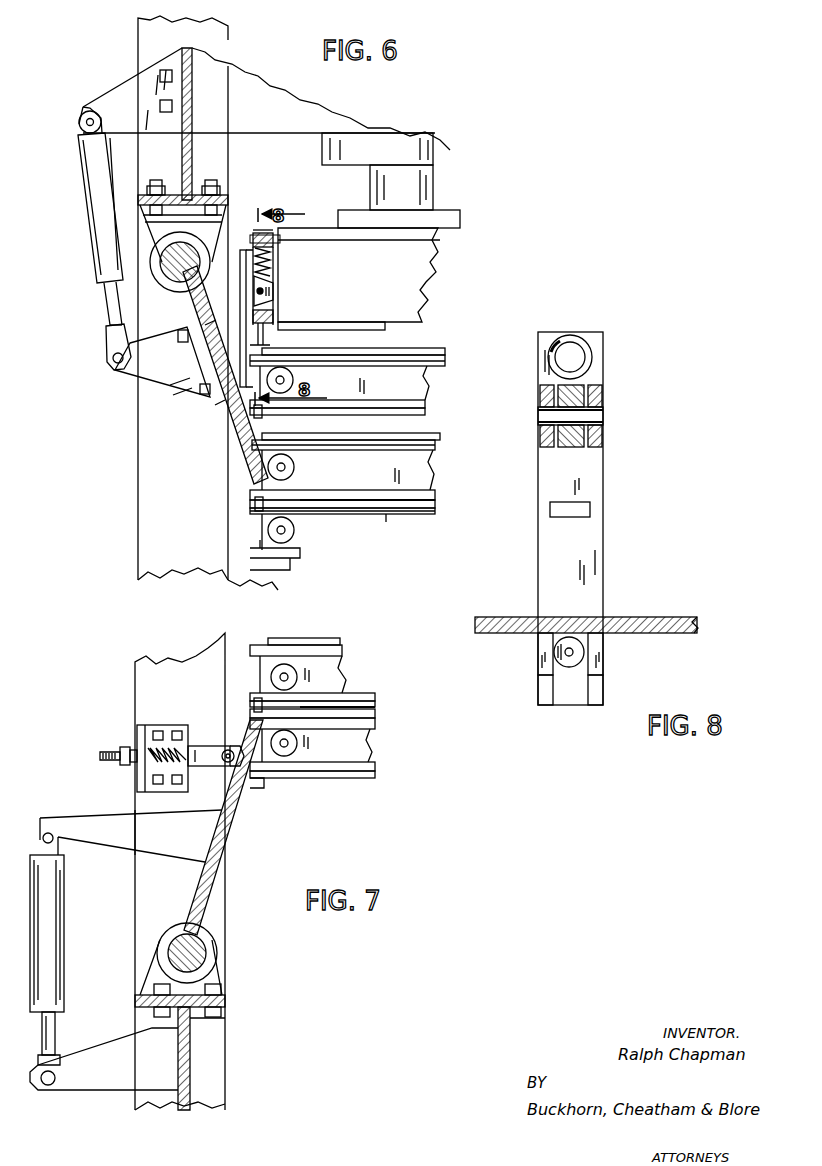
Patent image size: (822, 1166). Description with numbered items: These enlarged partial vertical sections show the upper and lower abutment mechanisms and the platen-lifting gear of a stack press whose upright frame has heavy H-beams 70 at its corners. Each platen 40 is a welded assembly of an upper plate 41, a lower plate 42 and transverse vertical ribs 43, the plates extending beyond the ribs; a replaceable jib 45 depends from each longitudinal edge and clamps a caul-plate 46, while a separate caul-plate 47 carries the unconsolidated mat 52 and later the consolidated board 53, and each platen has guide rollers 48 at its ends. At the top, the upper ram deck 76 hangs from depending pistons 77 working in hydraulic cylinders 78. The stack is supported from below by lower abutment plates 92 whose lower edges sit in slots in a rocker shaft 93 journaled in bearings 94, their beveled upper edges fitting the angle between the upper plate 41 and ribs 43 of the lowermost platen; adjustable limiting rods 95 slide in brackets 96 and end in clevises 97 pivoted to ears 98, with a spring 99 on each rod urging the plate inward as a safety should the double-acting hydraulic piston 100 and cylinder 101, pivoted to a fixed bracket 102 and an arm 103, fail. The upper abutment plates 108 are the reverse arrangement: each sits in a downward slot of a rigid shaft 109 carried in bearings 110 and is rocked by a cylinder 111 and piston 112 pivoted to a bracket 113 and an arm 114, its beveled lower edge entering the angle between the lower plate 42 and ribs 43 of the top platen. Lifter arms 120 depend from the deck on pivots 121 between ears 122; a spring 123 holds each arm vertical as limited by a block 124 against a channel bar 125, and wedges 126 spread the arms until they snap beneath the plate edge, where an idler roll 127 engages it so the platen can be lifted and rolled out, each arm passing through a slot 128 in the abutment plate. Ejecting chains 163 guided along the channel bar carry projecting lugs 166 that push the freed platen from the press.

In FIG. 6, the platen 40 is at (406, 380).
In FIG. 7, the platen 40 is at (314, 666).
In FIG. 6, the upper plate 41 is at (447, 362).
In FIG. 7, the upper plate 41 is at (337, 650).
In FIG. 8, the upper plate 41 is at (676, 624).
In FIG. 6, the lower plate 42 is at (426, 405).
In FIG. 7, the lower plate 42 is at (357, 698).
In FIG. 6, the transverse vertical ribs 43 is at (432, 381).
In FIG. 7, the transverse vertical ribs 43 is at (342, 673).
In FIG. 6, the jib 45 is at (262, 417).
In FIG. 7, the jib 45 is at (257, 706).
In FIG. 6, the caul-plate 46 is at (426, 412).
In FIG. 7, the caul-plate 46 is at (362, 705).
In FIG. 6, the caul-plate 47 is at (445, 357).
In FIG. 7, the caul-plate 47 is at (362, 714).
In FIG. 6, the guide rollers 48 is at (296, 380).
In FIG. 7, the guide rollers 48 is at (299, 677).
In FIG. 6, the unconsolidated mat 52 is at (420, 507).
In FIG. 7, the unconsolidated mat 52 is at (362, 709).
In FIG. 6, the consolidated board 53 is at (392, 352).
In FIG. 6, the H-beams 70 is at (218, 46).
In FIG. 7, the H-beams 70 is at (146, 690).
In FIG. 6, the ram deck 76 is at (388, 288).
In FIG. 6, the pistons 77 is at (422, 193).
In FIG. 6, the hydraulic cylinders 78 is at (428, 152).
In FIG. 7, the lower abutment plates 92 is at (212, 886).
In FIG. 7, the rocker shaft 93 is at (203, 950).
In FIG. 7, the bearings 94 is at (215, 980).
In FIG. 7, the adjustable limiting rods 95 is at (100, 755).
In FIG. 7, the brackets 96 is at (140, 774).
In FIG. 7, the clevises 97 is at (200, 746).
In FIG. 7, the ears 98 is at (230, 745).
In FIG. 7, the spring 99 is at (167, 744).
In FIG. 7, the hydraulic piston 100 is at (52, 1036).
In FIG. 7, the cylinder 101 is at (55, 960).
In FIG. 7, the fixed bracket 102 is at (116, 1084).
In FIG. 7, the arm 103 is at (122, 842).
In FIG. 6, the upper abutment plates 108 is at (250, 468).
In FIG. 6, the rigid shaft 109 is at (172, 278).
In FIG. 6, the bearings 110 is at (214, 238).
In FIG. 6, the cylinder 111 is at (97, 233).
In FIG. 6, the piston 112 is at (108, 312).
In FIG. 6, the bracket 113 is at (130, 86).
In FIG. 6, the arm 114 is at (146, 366).
In FIG. 6, the lifter arms 120 is at (242, 306).
In FIG. 8, the lifter arms 120 is at (592, 562).
In FIG. 8, the pivot 121 is at (600, 413).
In FIG. 8, the ears 122 is at (590, 450).
In FIG. 6, the spring 123 is at (272, 263).
In FIG. 8, the spring 123 is at (592, 358).
In FIG. 8, the block 124 is at (582, 510).
In FIG. 6, the channel bar 125 is at (273, 310).
In FIG. 8, the wedges 126 is at (598, 702).
In FIG. 8, the idler roll 127 is at (578, 650).
In FIG. 6, the slot 128 is at (220, 406).
In FIG. 6, the ejecting chains 163 is at (276, 240).
In FIG. 6, the projecting lugs 166 is at (267, 338).